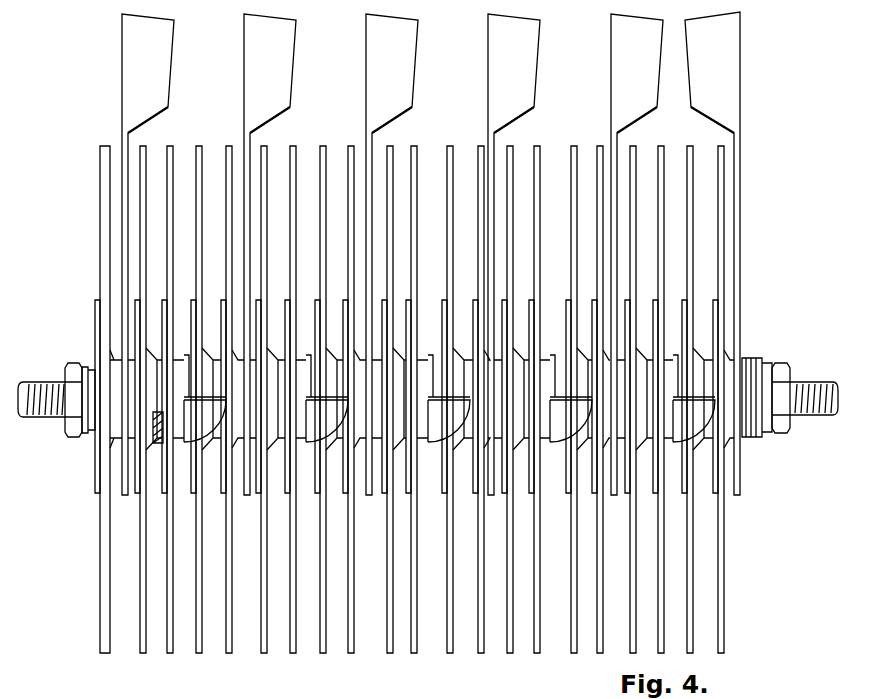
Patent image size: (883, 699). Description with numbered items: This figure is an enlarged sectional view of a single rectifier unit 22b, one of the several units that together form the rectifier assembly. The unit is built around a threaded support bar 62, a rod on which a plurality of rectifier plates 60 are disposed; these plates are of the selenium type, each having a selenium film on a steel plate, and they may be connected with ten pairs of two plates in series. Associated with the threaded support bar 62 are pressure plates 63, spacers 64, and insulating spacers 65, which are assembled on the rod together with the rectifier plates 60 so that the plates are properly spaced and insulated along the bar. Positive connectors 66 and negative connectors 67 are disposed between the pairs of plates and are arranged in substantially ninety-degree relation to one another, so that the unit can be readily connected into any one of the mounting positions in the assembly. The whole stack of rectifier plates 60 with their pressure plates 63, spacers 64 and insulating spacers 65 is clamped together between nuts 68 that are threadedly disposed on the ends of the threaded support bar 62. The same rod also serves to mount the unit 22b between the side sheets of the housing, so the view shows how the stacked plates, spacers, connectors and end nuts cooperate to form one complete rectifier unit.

The rectifier unit 22b is at (98, 81).
The rectifier plates 60 is at (175, 153).
The threaded support bar 62 is at (37, 382).
The pressure plates 63 is at (160, 312).
The spacers 64 is at (157, 445).
The insulating spacers 65 is at (160, 452).
The positive connectors 66 is at (169, 69).
The negative connectors 67 is at (192, 432).
The nuts 68 is at (72, 363).